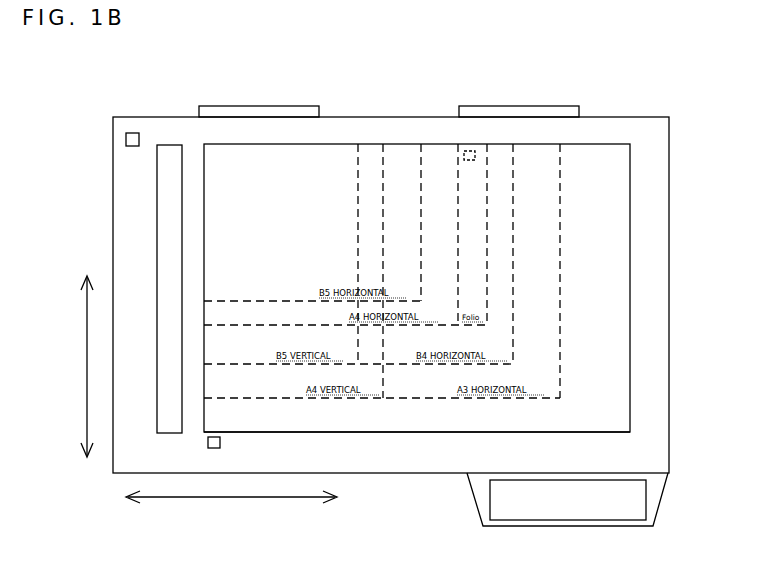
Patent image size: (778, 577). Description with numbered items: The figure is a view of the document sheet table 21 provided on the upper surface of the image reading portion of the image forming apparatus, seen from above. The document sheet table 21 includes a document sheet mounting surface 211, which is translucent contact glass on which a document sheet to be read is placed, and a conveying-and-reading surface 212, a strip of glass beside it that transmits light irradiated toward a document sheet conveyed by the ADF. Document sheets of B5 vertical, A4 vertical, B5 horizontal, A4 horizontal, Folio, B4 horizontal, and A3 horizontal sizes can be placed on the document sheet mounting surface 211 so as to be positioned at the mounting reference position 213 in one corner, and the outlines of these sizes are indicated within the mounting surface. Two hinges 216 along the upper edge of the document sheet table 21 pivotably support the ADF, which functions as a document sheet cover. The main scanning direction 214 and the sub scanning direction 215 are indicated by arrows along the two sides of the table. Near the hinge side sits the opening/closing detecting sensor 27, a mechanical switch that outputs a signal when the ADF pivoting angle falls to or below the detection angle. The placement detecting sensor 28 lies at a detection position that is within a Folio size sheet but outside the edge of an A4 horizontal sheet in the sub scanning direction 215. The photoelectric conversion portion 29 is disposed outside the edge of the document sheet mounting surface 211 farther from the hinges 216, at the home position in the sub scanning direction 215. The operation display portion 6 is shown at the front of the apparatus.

The document sheet table 21 is at (669, 282).
The hinges 216 is at (260, 105).
The opening/closing detecting sensor 27 is at (132, 147).
The conveying-and-reading surface 212 is at (168, 434).
The mounting reference position 213 is at (209, 155).
The document sheet mounting surface 211 is at (427, 433).
The placement detecting sensor 28 is at (470, 164).
The photoelectric conversion portion 29 is at (221, 440).
The main scanning direction 214 is at (86, 357).
The sub scanning direction 215 is at (223, 498).
The operation display portion 6 is at (646, 490).